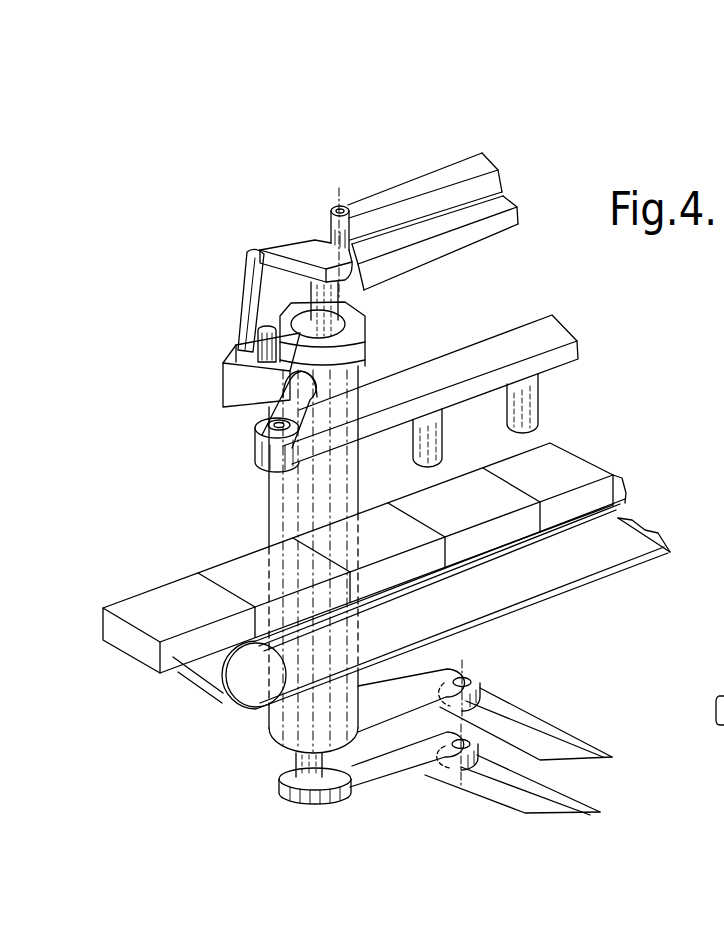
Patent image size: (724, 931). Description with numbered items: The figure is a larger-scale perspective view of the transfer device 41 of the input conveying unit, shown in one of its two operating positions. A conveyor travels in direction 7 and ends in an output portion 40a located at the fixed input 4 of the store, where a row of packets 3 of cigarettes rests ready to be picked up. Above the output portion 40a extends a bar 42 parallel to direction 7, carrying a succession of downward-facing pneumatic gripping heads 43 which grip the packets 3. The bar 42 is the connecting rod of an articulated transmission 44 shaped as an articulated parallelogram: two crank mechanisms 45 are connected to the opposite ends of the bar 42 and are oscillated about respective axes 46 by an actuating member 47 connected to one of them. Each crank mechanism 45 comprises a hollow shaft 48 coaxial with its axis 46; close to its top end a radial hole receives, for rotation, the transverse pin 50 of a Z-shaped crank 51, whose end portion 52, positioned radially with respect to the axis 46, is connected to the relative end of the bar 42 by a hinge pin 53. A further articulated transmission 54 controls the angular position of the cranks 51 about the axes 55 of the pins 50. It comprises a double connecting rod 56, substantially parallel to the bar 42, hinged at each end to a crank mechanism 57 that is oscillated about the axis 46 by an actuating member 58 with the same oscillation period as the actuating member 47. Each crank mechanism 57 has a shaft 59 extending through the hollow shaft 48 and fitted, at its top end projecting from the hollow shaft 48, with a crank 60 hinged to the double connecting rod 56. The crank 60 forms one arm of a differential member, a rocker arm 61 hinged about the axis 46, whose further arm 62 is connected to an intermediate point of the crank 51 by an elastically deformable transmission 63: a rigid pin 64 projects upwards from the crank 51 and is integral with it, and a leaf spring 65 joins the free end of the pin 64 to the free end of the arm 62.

The packets 3 is at (563, 472).
The input 4 is at (263, 512).
The direction 7 is at (390, 608).
The output portion 40a is at (588, 523).
The transfer device 41 is at (367, 188).
The bar 42 is at (538, 340).
The pneumatic gripping heads 43 is at (520, 407).
The articulated transmission 44 is at (212, 387).
The crank mechanisms 45 is at (218, 366).
The axes 46 is at (310, 808).
The actuating member 47 is at (487, 686).
The hollow shaft 48 is at (290, 727).
The transverse pin 50 is at (352, 364).
The Z-shaped crank 51 is at (227, 407).
The end portion 52 is at (372, 399).
The hinge pin 53 is at (256, 429).
The further articulated transmission 54 is at (440, 166).
The axes 55 is at (248, 334).
The double connecting rod 56 is at (472, 165).
The crank mechanism 57 is at (312, 233).
The actuating member 58 is at (422, 775).
The shaft 59 is at (335, 778).
The crank 60 is at (352, 260).
The rocker arm 61 is at (287, 242).
The further arm 62 is at (278, 252).
The elastically deformable transmission 63 is at (240, 271).
The rigid pin 64 is at (247, 310).
The leaf spring 65 is at (243, 268).